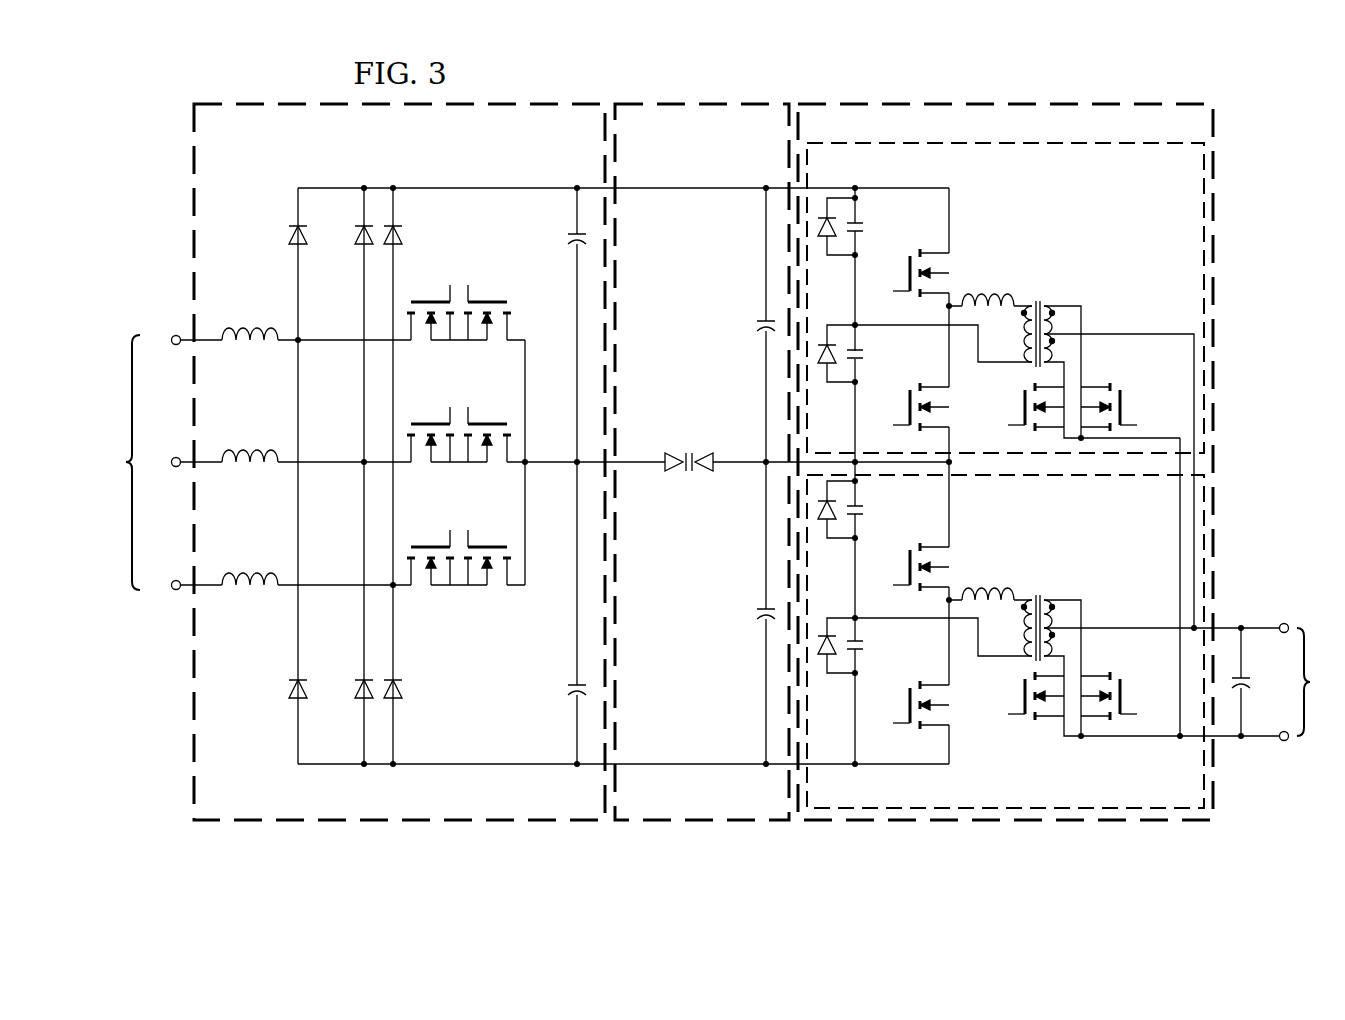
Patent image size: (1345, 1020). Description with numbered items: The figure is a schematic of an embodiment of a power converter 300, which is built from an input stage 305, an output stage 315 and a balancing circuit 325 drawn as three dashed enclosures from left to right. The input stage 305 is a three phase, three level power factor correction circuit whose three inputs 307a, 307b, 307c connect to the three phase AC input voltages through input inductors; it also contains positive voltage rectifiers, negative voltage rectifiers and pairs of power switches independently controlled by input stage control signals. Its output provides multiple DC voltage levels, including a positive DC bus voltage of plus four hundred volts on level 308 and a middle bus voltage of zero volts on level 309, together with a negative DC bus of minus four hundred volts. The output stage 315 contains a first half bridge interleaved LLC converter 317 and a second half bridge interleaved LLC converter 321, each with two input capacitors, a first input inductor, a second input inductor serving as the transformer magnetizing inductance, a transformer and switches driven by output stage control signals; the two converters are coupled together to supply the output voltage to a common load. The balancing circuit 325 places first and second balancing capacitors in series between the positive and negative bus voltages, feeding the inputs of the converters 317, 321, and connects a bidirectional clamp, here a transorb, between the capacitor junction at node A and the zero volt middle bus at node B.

The power converter 300 is at (1244, 225).
The input stage 305 is at (287, 100).
The input 307a is at (210, 345).
The input 307b is at (210, 467).
The input 307c is at (210, 590).
The level 308 is at (545, 187).
The level 309 is at (538, 467).
The output stage 315 is at (1114, 100).
The first half bridge interleaved LLC converter 317 is at (1091, 219).
The second half bridge interleaved LLC converter 321 is at (1091, 550).
The balancing circuit 325 is at (632, 100).